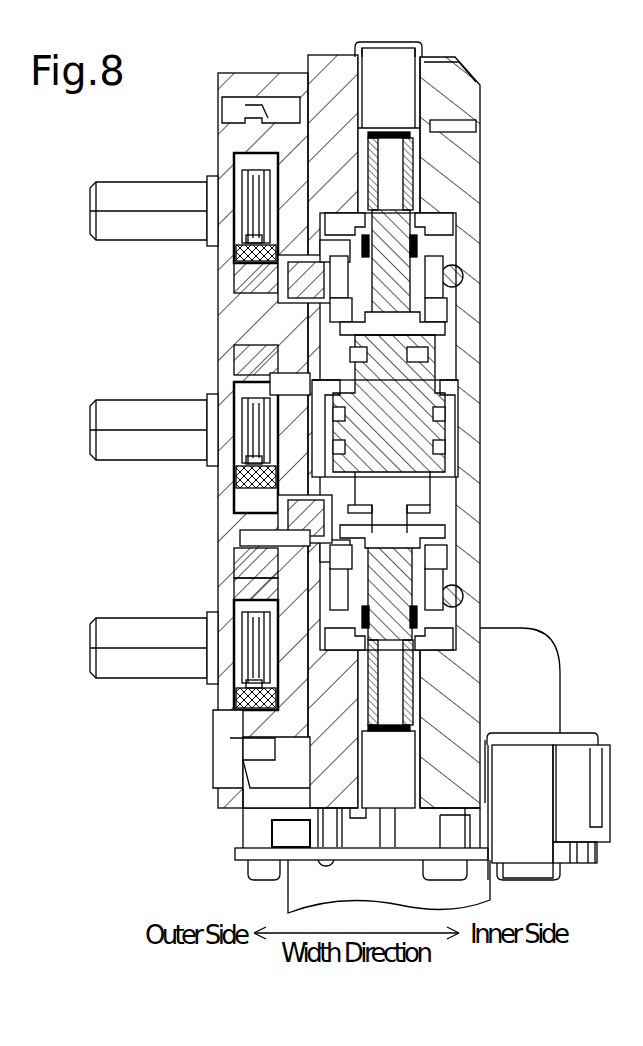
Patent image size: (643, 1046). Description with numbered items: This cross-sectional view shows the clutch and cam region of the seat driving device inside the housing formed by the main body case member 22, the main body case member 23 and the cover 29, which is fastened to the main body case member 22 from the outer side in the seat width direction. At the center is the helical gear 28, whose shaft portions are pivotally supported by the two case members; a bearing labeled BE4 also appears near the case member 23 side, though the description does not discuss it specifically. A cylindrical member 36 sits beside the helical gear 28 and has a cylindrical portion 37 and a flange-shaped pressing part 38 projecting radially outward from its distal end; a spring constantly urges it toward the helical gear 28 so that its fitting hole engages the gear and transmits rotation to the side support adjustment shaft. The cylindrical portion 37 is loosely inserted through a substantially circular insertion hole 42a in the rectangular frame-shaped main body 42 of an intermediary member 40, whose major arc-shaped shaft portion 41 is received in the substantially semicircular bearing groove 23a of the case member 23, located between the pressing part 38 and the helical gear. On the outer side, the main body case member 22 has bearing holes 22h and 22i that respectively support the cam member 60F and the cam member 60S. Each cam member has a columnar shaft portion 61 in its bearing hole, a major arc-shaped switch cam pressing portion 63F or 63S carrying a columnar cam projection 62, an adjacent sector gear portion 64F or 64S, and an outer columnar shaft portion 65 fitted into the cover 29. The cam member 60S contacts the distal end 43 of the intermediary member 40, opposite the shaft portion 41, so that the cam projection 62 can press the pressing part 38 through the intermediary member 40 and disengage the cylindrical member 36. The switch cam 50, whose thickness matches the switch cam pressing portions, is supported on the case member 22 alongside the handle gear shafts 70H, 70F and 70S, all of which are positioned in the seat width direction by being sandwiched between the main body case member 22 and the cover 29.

The main body case member 22 is at (310, 66).
The main body case member 23 is at (475, 142).
The cover 29 is at (240, 120).
The handle gear shaft 70H is at (108, 180).
The handle gear shaft 70F is at (108, 400).
The handle gear shaft 70S is at (108, 618).
The cam projection 62 is at (236, 256).
The switch cam pressing portion 63F is at (236, 276).
The bearing hole 22h is at (240, 302).
The shaft portion 65 is at (330, 320).
The cam member 60F is at (240, 332).
The sector gear portion 64F is at (300, 356).
The switch cam 50 is at (250, 382).
The cam member 60S is at (242, 494).
The bearing hole 22i is at (250, 513).
The cylindrical portion 37 is at (250, 539).
The sector gear portion 64S is at (250, 573).
The switch cam pressing portion 63S is at (250, 591).
The intermediary member 40 is at (319, 222).
The distal end 43 is at (290, 740).
The bearing BE4 is at (420, 130).
The pressing part 38 is at (457, 221).
The main body 42 is at (440, 241).
The bearing groove 23a is at (464, 271).
The shaft portion 41 is at (443, 301).
The insertion hole 42a is at (447, 314).
The cylindrical member 36 is at (447, 334).
The shaft portion 61 is at (440, 385).
The helical gear 28 is at (440, 431).